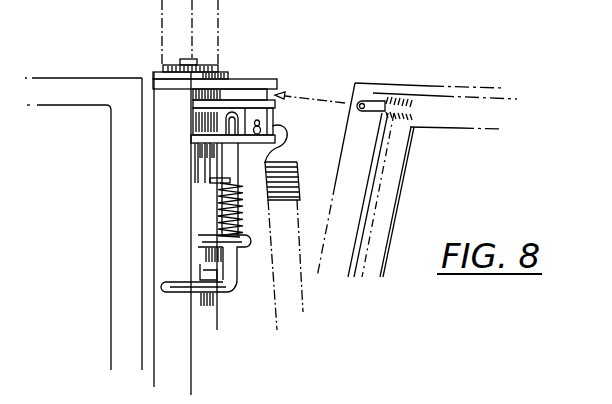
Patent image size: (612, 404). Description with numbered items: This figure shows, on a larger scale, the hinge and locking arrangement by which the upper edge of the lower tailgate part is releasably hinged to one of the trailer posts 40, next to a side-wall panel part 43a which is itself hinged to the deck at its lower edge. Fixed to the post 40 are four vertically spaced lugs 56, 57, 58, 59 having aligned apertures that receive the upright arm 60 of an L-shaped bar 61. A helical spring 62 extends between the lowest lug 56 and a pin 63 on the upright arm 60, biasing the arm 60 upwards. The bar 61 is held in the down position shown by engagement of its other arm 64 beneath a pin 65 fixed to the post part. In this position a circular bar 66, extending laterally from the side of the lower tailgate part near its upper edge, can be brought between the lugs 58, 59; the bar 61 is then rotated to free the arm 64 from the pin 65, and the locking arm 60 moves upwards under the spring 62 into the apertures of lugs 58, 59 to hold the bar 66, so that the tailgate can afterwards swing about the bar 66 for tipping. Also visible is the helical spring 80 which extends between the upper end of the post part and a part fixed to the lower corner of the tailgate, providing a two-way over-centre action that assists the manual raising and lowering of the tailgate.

The post 40 is at (222, 331).
The panel part 43a is at (87, 90).
The lug 56 is at (239, 250).
The lug 57 is at (198, 140).
The lug 58 is at (250, 107).
The lug 59 is at (231, 78).
The upright arm 60 is at (230, 158).
The L-shaped bar 61 is at (230, 295).
The helical spring 62 is at (220, 207).
The pin 63 is at (212, 182).
The arm 64 is at (175, 293).
The pin 65 is at (200, 274).
The circular bar 66 is at (378, 101).
The helical spring 80 is at (290, 163).